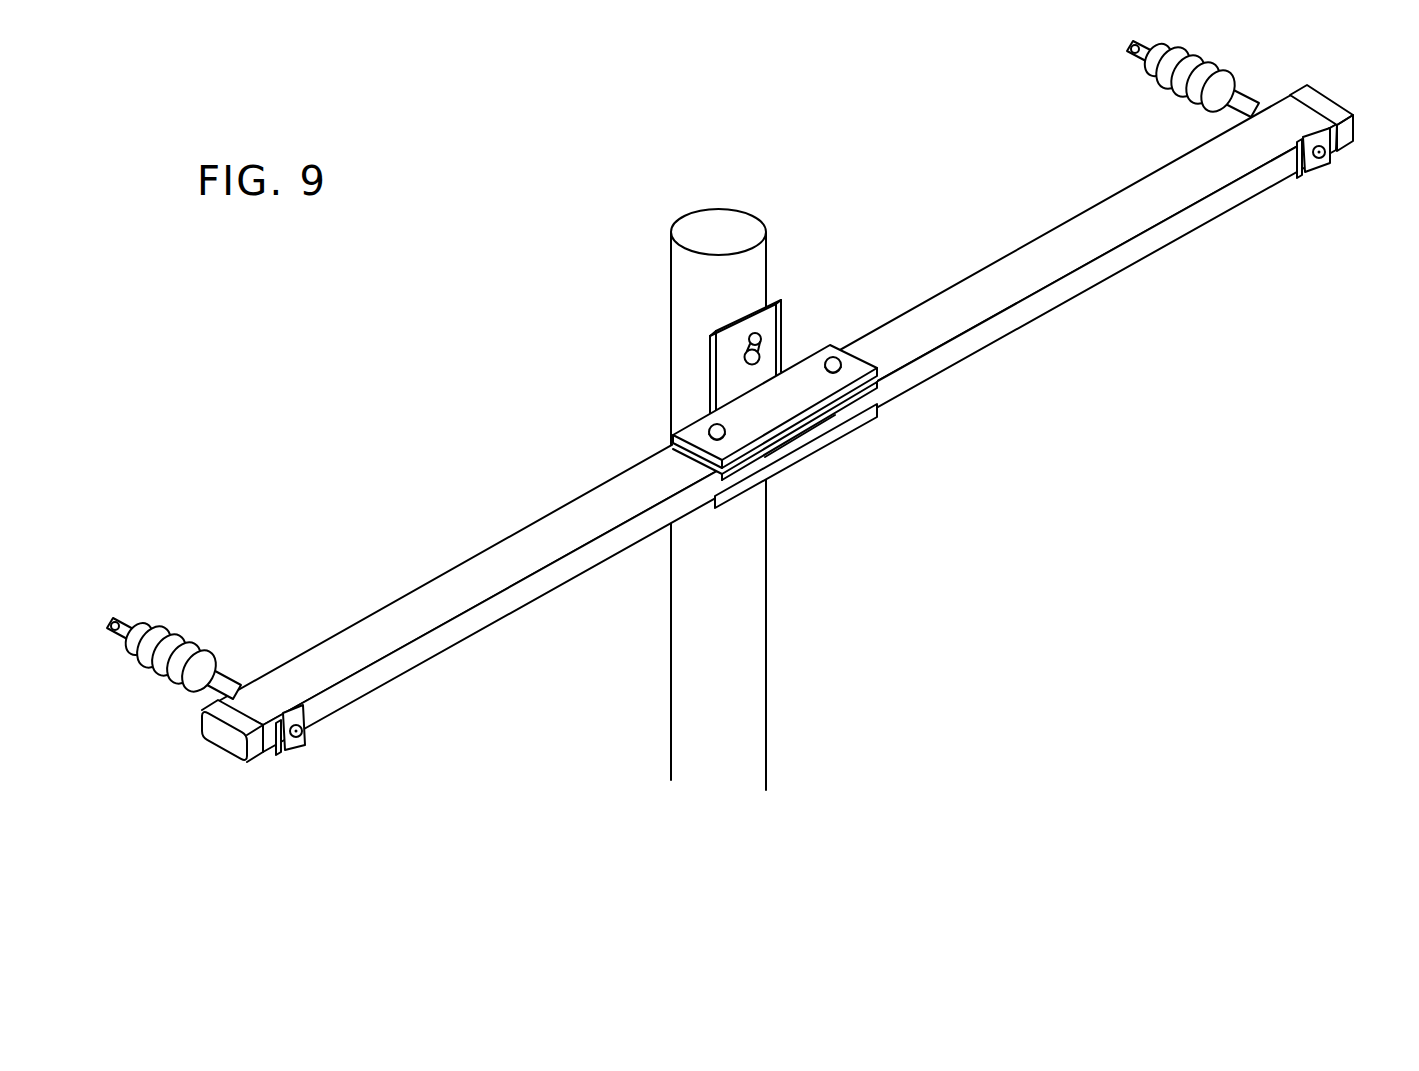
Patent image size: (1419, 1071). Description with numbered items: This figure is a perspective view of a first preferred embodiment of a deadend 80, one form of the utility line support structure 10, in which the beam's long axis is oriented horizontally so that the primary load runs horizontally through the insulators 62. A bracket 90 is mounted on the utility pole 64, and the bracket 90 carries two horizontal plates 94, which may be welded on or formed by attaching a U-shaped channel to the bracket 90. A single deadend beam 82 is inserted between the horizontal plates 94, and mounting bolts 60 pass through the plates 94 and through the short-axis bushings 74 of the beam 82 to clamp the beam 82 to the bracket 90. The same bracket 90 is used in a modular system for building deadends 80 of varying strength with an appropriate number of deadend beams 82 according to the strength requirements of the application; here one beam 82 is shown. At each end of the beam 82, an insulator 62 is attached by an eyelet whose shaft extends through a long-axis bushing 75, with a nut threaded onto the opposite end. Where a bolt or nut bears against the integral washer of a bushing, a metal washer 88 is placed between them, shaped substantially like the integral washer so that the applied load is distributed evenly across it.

The utility line support structure 10 is at (450, 532).
The mounting bolt 60 is at (708, 430).
The insulator 62 is at (1190, 90).
The utility pole 64 is at (767, 682).
The short-axis bushing 74 is at (858, 405).
The long-axis bushing 75 is at (270, 766).
The deadend 80 is at (903, 270).
The deadend beam 82 is at (570, 576).
The metal washer 88 is at (306, 737).
The bracket 90 is at (700, 365).
The horizontal plate 94 is at (876, 362).